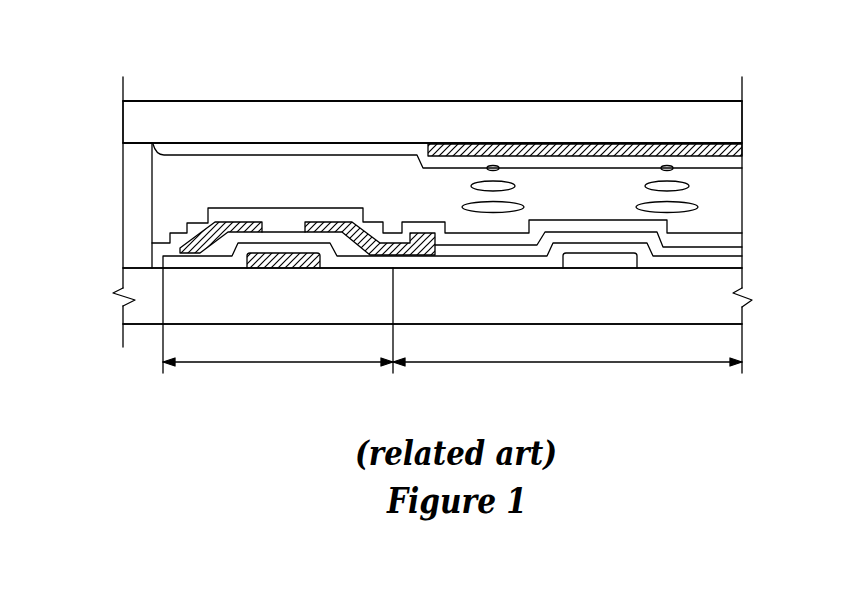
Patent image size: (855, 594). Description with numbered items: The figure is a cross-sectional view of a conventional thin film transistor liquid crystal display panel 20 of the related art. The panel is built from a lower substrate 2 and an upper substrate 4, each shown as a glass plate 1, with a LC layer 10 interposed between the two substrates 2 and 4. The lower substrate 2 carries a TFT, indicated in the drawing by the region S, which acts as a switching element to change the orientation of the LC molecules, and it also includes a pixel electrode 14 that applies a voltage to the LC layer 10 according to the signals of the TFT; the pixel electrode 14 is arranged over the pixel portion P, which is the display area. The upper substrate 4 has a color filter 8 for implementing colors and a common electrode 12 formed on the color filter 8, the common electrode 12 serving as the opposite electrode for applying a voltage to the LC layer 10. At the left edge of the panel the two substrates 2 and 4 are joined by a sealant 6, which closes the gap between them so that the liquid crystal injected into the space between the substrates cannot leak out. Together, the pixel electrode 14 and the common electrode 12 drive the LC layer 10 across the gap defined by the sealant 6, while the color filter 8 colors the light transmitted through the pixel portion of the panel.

The liquid crystal display device (related art) 20 is at (280, 90).
The substrate 1 is at (462, 127).
The upper substrate 4 is at (752, 101).
The color filter 8 is at (620, 150).
The common electrode 12 is at (717, 162).
The LC layer 10 is at (752, 168).
The sealant 6 is at (128, 205).
The lower substrate 2 is at (752, 233).
The pixel electrode 14 is at (735, 250).